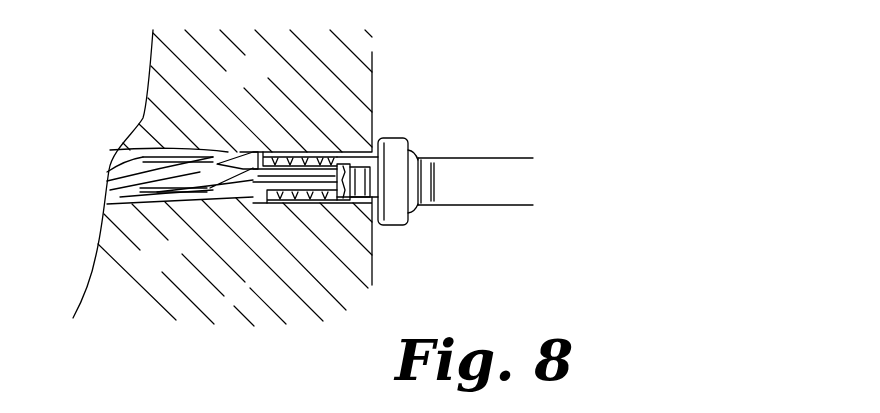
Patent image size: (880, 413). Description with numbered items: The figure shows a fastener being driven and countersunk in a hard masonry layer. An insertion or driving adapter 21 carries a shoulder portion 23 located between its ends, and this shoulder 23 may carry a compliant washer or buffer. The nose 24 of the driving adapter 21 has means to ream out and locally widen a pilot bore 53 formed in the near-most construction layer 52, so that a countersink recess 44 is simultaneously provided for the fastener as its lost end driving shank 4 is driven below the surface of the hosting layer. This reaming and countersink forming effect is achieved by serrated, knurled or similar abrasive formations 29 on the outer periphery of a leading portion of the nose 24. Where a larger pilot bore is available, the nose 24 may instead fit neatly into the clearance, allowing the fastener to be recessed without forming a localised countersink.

The lost end driving shank 4 is at (263, 176).
The driving adapter 21 is at (531, 197).
The shoulder portion 23 is at (397, 150).
The nose 24 is at (316, 150).
The abrasive formations 29 is at (305, 206).
The countersink recess 44 is at (354, 120).
The near-most construction layer 52 is at (177, 268).
The pilot bore 53 is at (163, 140).